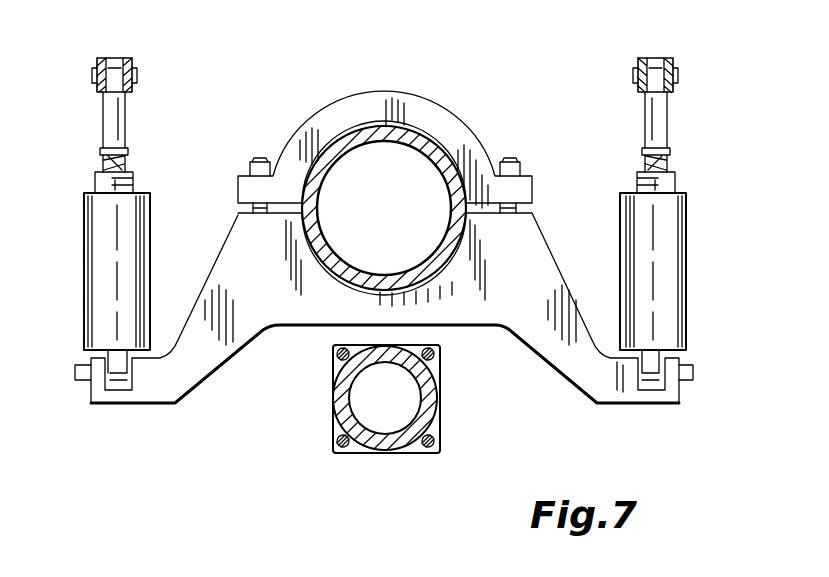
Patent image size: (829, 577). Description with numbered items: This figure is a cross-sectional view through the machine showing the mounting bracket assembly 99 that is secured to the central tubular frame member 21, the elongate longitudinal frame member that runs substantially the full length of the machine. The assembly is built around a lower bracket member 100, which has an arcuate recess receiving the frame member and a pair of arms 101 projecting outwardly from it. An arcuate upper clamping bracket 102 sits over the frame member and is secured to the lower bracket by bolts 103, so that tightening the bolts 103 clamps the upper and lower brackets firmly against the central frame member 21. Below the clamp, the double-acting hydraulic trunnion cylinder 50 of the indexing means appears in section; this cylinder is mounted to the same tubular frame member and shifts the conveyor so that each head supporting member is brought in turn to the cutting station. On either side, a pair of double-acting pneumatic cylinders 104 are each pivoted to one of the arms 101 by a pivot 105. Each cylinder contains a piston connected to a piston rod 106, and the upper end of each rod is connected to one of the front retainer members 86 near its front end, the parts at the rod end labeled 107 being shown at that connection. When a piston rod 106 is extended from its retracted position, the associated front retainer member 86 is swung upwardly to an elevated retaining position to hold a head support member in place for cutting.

The mounting bracket assembly 99 is at (318, 104).
The lower bracket member 100 is at (513, 316).
The arms 101 is at (160, 403).
The arcuate upper clamping bracket 102 is at (477, 138).
The bolts 103 is at (259, 162).
The central tubular frame member 21 is at (410, 137).
The double-acting hydraulic trunnion cylinder 50 is at (430, 402).
The double-acting pneumatic cylinders 104 is at (93, 240).
The pivot 105 is at (693, 372).
The piston rod 106 is at (118, 120).
The nut ears 107 is at (137, 72).
The front retainer members 86 is at (132, 56).